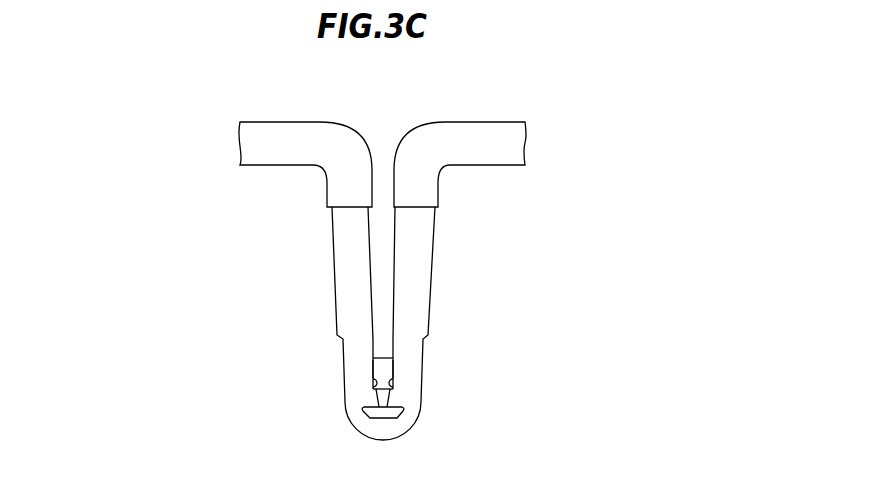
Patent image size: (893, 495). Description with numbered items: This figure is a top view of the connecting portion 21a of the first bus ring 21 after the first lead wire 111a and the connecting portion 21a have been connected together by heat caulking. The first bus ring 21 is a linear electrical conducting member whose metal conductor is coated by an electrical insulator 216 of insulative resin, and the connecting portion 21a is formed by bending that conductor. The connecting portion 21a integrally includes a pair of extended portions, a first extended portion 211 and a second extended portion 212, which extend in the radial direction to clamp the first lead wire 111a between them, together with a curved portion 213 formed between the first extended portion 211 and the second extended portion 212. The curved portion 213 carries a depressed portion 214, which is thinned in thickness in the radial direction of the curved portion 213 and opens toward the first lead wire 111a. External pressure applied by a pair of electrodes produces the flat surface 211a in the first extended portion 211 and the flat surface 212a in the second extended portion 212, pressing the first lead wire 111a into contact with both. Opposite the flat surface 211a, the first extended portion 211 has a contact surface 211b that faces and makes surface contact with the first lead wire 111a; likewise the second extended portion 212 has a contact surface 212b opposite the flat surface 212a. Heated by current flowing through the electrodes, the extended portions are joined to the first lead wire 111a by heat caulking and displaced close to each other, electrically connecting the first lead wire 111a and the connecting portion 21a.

The first bus ring 21 is at (205, 78).
The electrical insulator 216 is at (497, 133).
The connecting portion 21a is at (278, 297).
The first extended portion 211 is at (339, 252).
The second extended portion 212 is at (422, 251).
The flat surface 211a is at (342, 375).
The contact surface 211b is at (373, 386).
The flat surface 212a is at (422, 378).
The contact surface 212b is at (393, 386).
The first lead wire 111a is at (383, 368).
The curved portion 213 is at (372, 432).
The depressed portion 214 is at (388, 415).